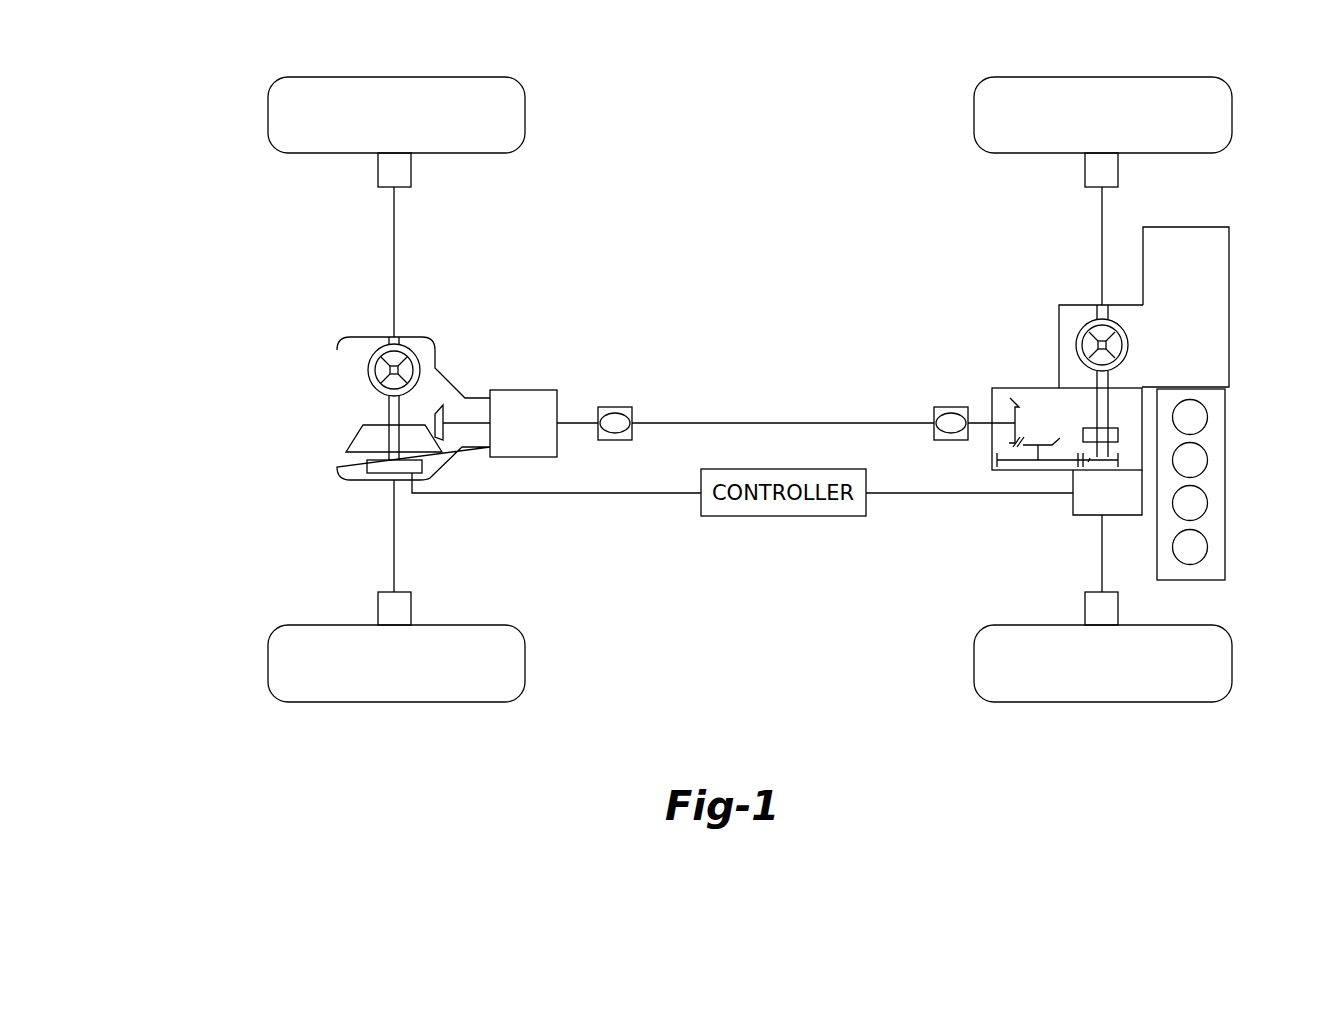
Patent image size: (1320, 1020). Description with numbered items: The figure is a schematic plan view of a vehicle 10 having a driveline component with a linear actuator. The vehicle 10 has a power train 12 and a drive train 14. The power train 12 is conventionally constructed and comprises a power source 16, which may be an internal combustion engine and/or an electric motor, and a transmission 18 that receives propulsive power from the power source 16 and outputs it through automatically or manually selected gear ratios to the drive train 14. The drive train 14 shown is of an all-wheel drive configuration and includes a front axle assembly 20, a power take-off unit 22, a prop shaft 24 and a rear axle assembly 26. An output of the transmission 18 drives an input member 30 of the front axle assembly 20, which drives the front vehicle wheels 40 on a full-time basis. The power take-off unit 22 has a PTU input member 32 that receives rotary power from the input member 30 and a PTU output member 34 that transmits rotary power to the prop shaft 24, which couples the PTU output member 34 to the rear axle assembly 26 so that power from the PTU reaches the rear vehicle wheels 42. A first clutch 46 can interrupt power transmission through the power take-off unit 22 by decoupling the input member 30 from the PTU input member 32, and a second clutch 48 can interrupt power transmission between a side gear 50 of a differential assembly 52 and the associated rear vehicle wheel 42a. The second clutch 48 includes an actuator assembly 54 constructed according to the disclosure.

The vehicle 10 is at (214, 744).
The power train 12 is at (1222, 411).
The drive train 14 is at (786, 362).
The power source 16 is at (1218, 575).
The transmission 18 is at (1220, 242).
The front axle assembly 20 is at (1104, 347).
The power take-off unit 22 is at (1100, 430).
The prop shaft 24 is at (680, 423).
The rear axle assembly 26 is at (467, 425).
The input member 30 is at (1128, 352).
The PTU input member 32 is at (1090, 462).
The PTU output member 34 is at (979, 423).
The front vehicle wheels 40 is at (974, 113).
The rear vehicle wheels 42 is at (268, 113).
The rear vehicle wheel 42a is at (268, 660).
The first clutch 46 is at (1118, 435).
The second clutch 48 is at (358, 486).
The side gear 50 is at (342, 410).
The differential assembly 52 is at (417, 342).
The actuator assembly 54 is at (422, 466).